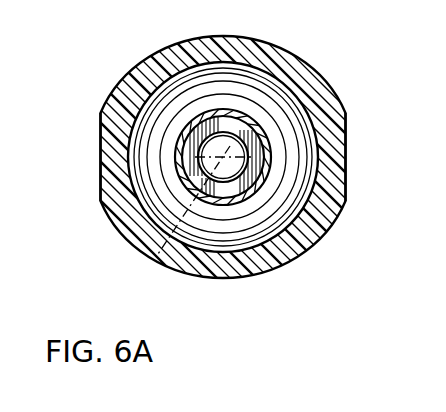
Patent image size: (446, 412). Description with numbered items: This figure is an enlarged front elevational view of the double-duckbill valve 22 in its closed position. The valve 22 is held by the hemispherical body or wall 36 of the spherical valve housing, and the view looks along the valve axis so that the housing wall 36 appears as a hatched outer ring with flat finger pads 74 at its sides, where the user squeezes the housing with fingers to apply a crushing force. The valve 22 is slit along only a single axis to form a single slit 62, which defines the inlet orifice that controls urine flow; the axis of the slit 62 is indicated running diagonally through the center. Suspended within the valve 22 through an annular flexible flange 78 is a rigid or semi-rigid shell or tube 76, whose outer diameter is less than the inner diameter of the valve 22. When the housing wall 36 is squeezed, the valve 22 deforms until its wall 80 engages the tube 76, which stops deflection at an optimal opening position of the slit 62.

The double-duckbill valve 22 is at (262, 131).
The hemispherical body or wall 36 is at (300, 242).
The slit 62 is at (155, 252).
The finger pads 74 is at (100, 152).
The tube 76 is at (248, 155).
The annular flexible flange 78 is at (218, 193).
The wall of the valve 80 is at (265, 180).